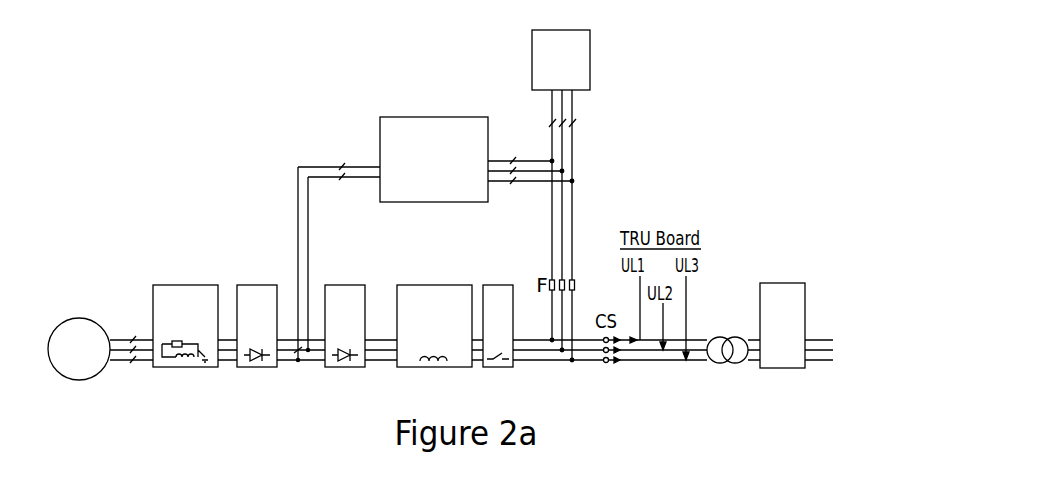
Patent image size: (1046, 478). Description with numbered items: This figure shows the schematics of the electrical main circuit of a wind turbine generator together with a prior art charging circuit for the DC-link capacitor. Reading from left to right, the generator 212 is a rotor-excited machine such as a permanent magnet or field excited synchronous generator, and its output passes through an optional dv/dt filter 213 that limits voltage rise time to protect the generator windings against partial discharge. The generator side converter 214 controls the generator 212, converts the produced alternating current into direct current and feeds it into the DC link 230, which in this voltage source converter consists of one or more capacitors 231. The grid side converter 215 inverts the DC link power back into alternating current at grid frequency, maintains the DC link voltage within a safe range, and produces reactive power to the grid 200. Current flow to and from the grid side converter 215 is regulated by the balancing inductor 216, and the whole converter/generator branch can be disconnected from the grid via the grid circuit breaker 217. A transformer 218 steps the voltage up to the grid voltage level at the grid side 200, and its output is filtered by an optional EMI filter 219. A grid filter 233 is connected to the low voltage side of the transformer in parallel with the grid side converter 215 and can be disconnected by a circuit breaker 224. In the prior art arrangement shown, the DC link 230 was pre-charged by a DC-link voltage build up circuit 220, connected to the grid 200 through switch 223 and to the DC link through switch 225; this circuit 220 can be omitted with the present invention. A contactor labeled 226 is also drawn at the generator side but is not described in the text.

The grid 200 is at (858, 323).
The generator 212 is at (85, 314).
The dv/dt filter 213 is at (181, 283).
The generator side converter 214 is at (243, 283).
The grid side converter 215 is at (345, 283).
The balancing inductor 216 is at (425, 283).
The grid circuit breaker 217 is at (500, 283).
The transformer 218 is at (724, 333).
The EMI filter 219 is at (783, 281).
The DC-link voltage build up circuit 220 is at (426, 115).
The switch 223 is at (513, 130).
The circuit breaker 224 is at (578, 126).
The switch 225 is at (345, 157).
The contactor K at generator 226 is at (133, 306).
The DC link 230 is at (299, 328).
The capacitor 231 is at (293, 358).
The grid filter 233 is at (596, 44).